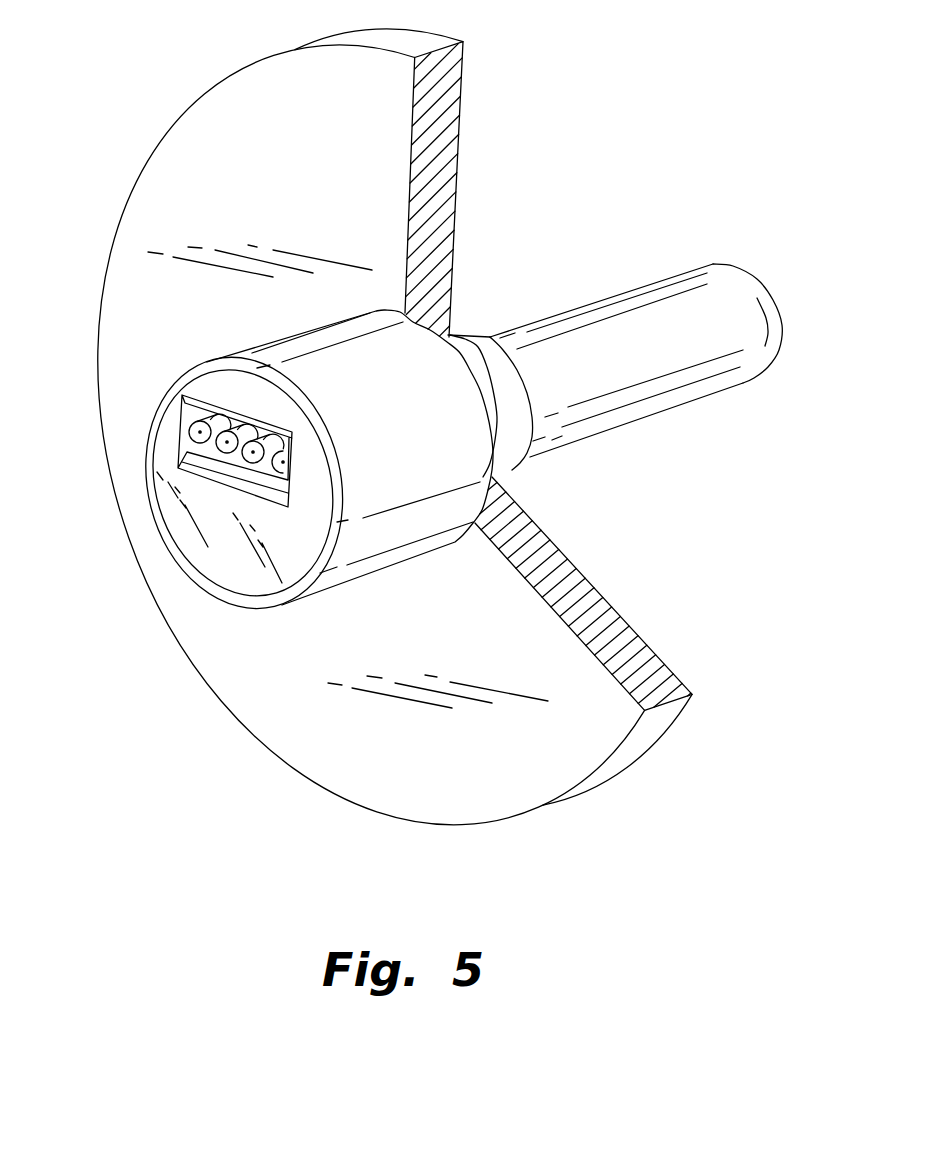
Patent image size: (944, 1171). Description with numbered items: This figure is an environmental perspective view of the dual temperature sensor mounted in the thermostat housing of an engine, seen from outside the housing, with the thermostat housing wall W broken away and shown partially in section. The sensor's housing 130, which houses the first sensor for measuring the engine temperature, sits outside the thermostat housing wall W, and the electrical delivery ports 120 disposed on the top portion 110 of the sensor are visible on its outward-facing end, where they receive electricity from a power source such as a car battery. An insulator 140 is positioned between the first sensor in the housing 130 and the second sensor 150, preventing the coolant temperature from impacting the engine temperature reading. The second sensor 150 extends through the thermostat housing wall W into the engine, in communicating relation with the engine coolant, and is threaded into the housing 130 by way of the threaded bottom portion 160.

The top portion 110 is at (217, 575).
The electrical delivery ports 120 is at (188, 428).
The housing 130 is at (418, 432).
The insulator 140 is at (513, 378).
The second sensor 150 is at (677, 355).
The threaded bottom portion 160 is at (500, 433).
The thermostat housing wall W is at (327, 173).